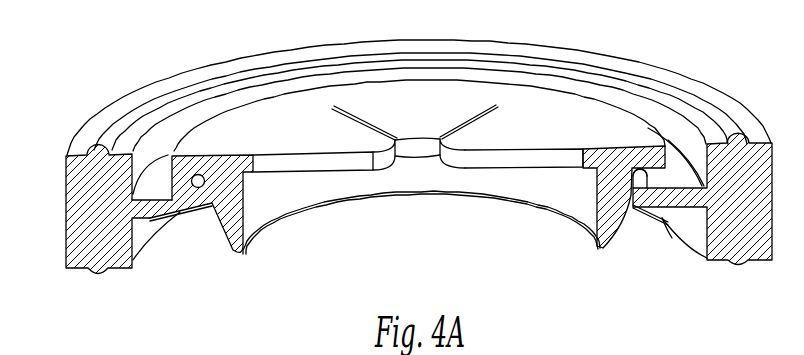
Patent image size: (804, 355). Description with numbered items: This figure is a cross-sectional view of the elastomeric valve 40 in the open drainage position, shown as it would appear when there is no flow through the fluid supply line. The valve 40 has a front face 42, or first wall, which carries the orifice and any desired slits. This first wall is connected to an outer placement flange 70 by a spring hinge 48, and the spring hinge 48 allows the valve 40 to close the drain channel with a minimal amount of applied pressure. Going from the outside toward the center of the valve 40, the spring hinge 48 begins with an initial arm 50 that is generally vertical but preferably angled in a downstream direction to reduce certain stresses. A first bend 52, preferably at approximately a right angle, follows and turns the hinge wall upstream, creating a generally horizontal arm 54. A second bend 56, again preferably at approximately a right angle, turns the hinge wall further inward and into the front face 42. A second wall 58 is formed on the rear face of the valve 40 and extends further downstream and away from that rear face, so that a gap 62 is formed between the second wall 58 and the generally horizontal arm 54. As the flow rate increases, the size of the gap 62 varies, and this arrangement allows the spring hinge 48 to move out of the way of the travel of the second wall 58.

The valve 40 is at (660, 36).
The front face 42 is at (403, 112).
The spring hinge 48 is at (666, 223).
The initial arm 50 is at (148, 218).
The first bend 52 is at (182, 219).
The generally horizontal arm 54 is at (168, 178).
The second bend 56 is at (220, 157).
The second wall 58 is at (242, 250).
The gap 62 is at (203, 177).
The outer placement flange 70 is at (85, 200).